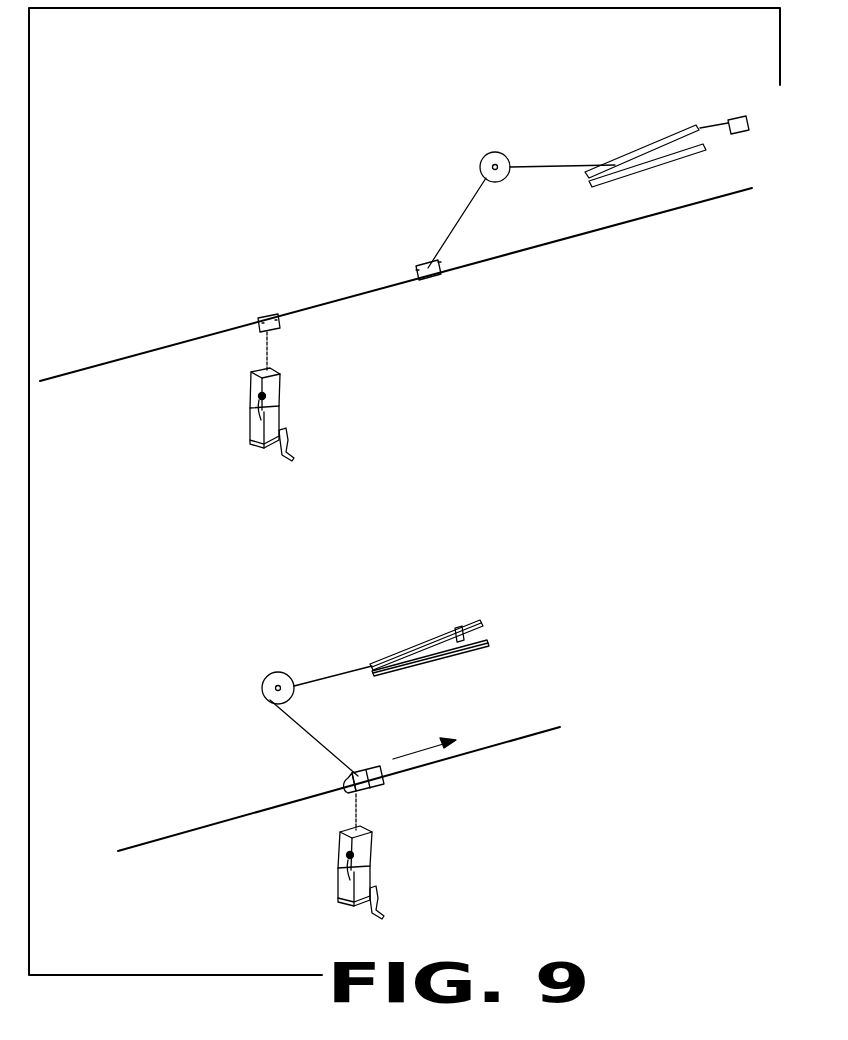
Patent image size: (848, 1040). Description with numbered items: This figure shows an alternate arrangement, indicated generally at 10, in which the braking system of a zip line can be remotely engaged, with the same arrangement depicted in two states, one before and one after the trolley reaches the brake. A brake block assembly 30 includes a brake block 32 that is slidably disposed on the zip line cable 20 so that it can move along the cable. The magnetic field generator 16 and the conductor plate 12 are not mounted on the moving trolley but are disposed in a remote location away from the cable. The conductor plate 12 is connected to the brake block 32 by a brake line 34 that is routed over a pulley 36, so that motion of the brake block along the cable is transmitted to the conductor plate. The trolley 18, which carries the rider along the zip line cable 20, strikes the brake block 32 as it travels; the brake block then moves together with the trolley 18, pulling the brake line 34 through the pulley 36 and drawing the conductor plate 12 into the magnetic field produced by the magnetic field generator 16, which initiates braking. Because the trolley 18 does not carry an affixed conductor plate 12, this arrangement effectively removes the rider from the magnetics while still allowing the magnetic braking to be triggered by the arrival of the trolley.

The amusement ride system 10 is at (100, 100).
The conductor plate 12 is at (734, 118).
The magnetic field generator 16 is at (672, 135).
The trolley 18 is at (260, 327).
The zip line cable 20 is at (333, 302).
The brake block assembly 30 is at (434, 131).
The brake block 32 is at (440, 278).
The brake line 34 is at (442, 226).
The pulley 36 is at (488, 158).